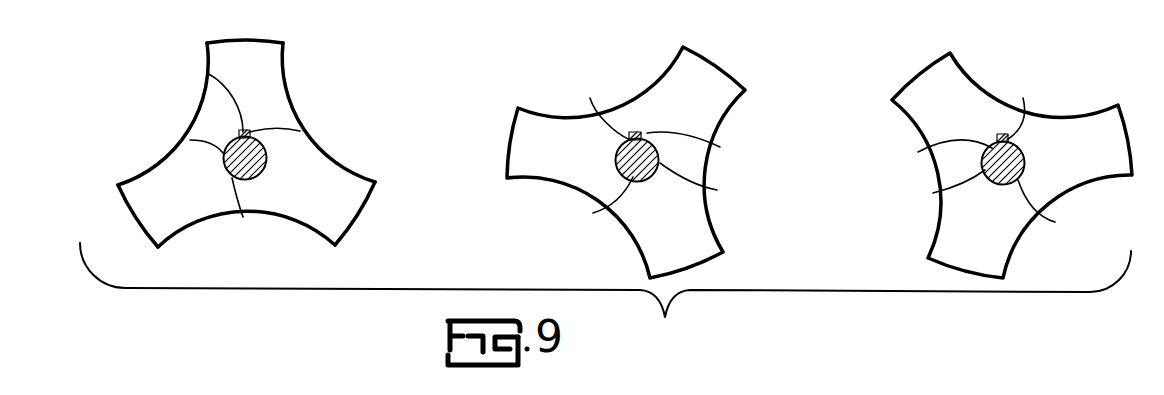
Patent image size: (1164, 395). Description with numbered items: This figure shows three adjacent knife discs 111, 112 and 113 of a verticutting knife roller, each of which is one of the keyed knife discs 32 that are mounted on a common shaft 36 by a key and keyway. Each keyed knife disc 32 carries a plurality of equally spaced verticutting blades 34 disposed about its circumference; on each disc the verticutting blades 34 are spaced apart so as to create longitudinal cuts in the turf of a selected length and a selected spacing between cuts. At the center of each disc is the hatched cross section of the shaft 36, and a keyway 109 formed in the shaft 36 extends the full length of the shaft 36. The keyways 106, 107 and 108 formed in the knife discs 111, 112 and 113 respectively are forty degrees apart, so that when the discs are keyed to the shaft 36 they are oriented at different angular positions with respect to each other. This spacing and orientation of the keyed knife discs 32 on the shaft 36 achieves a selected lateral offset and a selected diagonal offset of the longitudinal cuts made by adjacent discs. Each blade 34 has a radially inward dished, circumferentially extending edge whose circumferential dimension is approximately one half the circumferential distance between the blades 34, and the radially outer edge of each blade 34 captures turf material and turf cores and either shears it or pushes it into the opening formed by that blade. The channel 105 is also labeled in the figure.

The keyed knife disc 32 is at (212, 118).
The verticutting blade 34 is at (262, 60).
The shaft 36 is at (243, 217).
The channel 105 is at (207, 73).
The keyway 106 is at (190, 140).
The keyway 107 is at (593, 213).
The keyway 108 is at (933, 193).
The keyway 109 is at (300, 131).
The knife disc 111 is at (273, 95).
The knife disc 112 is at (712, 95).
The knife disc 113 is at (960, 88).